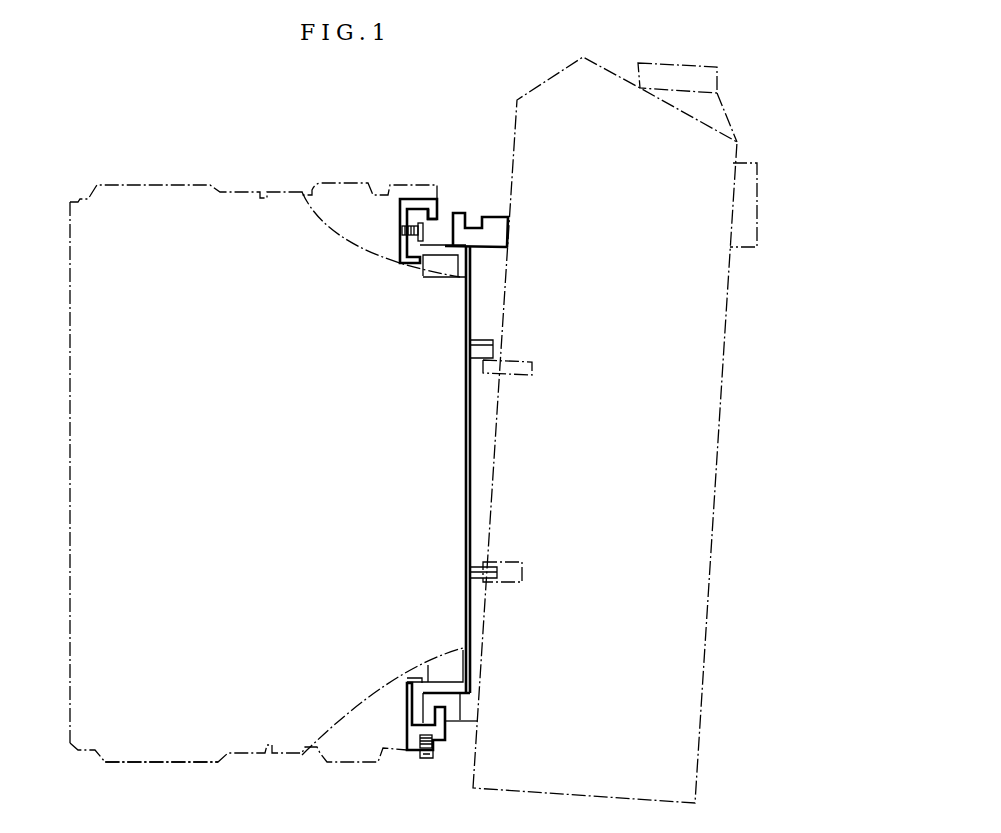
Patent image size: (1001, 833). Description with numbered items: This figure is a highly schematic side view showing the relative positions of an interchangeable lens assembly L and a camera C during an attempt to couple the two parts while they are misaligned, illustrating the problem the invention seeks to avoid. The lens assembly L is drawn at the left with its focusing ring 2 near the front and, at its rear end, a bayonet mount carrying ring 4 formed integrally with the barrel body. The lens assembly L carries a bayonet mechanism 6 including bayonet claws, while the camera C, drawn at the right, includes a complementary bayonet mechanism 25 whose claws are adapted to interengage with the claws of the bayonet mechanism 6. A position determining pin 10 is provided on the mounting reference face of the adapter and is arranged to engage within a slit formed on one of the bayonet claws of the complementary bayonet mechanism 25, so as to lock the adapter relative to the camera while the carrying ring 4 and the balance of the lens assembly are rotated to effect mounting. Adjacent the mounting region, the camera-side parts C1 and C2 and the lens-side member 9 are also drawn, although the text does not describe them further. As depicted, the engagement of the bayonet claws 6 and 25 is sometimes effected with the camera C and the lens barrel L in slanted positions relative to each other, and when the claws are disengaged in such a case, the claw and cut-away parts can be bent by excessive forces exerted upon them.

The interchangeable lens assembly L is at (88, 442).
The camera C is at (722, 311).
The camera contact / coupling member C1 is at (521, 373).
The camera contact / coupling member C2 is at (511, 563).
The focusing ring 2 is at (195, 738).
The bayonet mount carrying ring 4 is at (412, 195).
The bayonet mechanism 6 is at (438, 212).
The mount ring member 9 is at (462, 263).
The position determining pin 10 is at (424, 236).
The complementary bayonet mechanism 25 is at (462, 222).